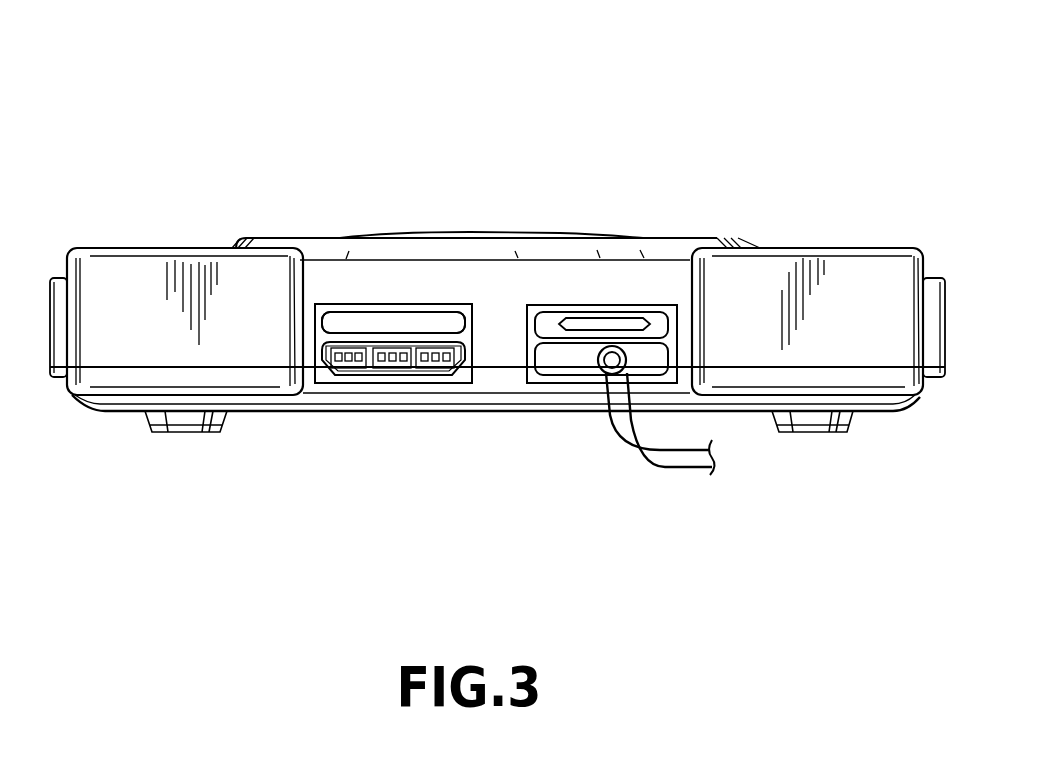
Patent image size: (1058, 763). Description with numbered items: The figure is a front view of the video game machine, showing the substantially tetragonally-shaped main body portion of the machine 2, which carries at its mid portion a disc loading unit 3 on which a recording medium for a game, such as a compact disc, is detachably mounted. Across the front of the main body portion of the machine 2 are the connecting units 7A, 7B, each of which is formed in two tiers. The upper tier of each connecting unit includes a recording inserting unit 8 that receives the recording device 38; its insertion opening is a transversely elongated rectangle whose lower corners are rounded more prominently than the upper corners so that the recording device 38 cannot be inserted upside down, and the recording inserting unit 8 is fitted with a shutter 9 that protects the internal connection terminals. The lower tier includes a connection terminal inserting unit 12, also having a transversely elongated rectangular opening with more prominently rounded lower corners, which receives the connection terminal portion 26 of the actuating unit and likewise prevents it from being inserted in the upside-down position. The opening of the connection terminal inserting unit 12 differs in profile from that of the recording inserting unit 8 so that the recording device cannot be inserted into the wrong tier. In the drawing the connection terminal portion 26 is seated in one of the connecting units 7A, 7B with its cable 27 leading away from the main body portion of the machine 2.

The main body portion of the machine 2 is at (497, 295).
The disc loading unit 3 is at (405, 232).
The connecting unit 7A is at (368, 337).
The connecting unit 7B is at (568, 350).
The recording inserting unit 8 is at (325, 305).
The shutter 9 is at (445, 320).
The connection terminal inserting unit 12 is at (332, 380).
The connection terminal portion 26 is at (593, 383).
The cable 27 is at (695, 469).
The recording device 38 is at (656, 318).